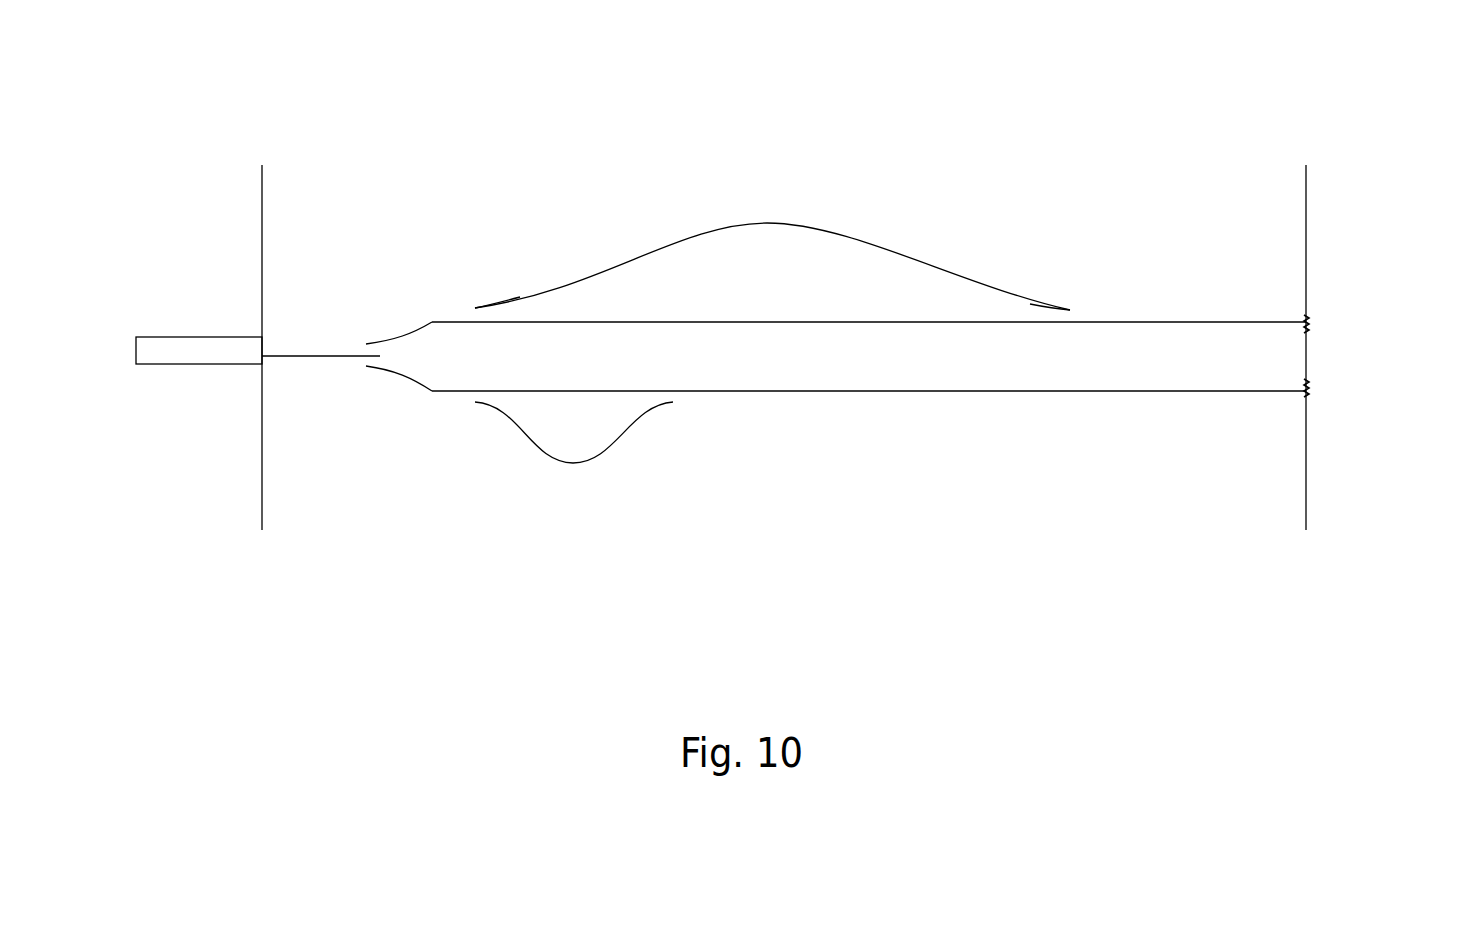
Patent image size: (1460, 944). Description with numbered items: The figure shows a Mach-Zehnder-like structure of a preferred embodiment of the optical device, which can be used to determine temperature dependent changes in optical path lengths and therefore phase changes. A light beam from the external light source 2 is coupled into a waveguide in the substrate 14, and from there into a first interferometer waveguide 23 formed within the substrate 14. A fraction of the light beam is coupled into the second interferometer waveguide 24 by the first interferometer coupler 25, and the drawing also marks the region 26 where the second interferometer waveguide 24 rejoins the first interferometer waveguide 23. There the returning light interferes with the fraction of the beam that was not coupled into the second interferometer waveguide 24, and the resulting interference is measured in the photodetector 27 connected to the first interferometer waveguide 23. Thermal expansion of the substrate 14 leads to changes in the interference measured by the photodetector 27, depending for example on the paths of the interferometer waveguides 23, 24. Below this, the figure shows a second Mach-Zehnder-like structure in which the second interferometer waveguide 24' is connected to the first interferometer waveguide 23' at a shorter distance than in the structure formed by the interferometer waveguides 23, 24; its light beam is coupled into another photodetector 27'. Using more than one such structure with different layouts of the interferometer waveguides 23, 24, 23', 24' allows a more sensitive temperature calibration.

The external light source 2 is at (170, 352).
The substrate 14 is at (332, 267).
The first interferometer waveguide 23 is at (393, 218).
The first interferometer waveguide 23' is at (398, 469).
The second interferometer waveguide 24 is at (772, 163).
The second interferometer waveguide 24' is at (574, 532).
The first interferometer coupler 25 is at (486, 285).
The end of bulge region 26 is at (1050, 284).
The photodetector 27 is at (1374, 265).
The photodetector 27' is at (1367, 415).